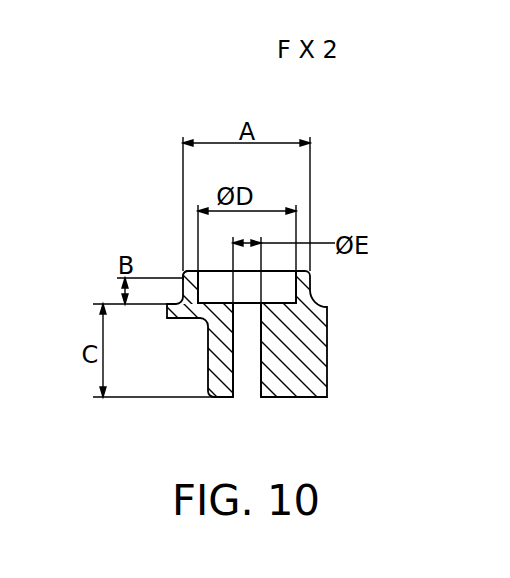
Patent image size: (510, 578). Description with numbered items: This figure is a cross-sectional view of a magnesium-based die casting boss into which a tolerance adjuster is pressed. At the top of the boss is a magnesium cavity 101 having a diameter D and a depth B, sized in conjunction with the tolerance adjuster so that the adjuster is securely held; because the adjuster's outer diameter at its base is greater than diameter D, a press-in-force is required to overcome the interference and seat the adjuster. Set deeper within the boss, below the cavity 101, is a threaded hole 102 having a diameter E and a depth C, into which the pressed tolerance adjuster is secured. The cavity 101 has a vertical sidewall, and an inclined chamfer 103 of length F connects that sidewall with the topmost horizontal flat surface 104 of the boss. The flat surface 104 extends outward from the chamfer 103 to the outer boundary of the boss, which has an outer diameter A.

The magnesium cavity 101 is at (276, 295).
The threaded hole 102 is at (247, 374).
The inclined chamfer 103 is at (198, 271).
The topmost horizontal flat surface 104 is at (185, 268).